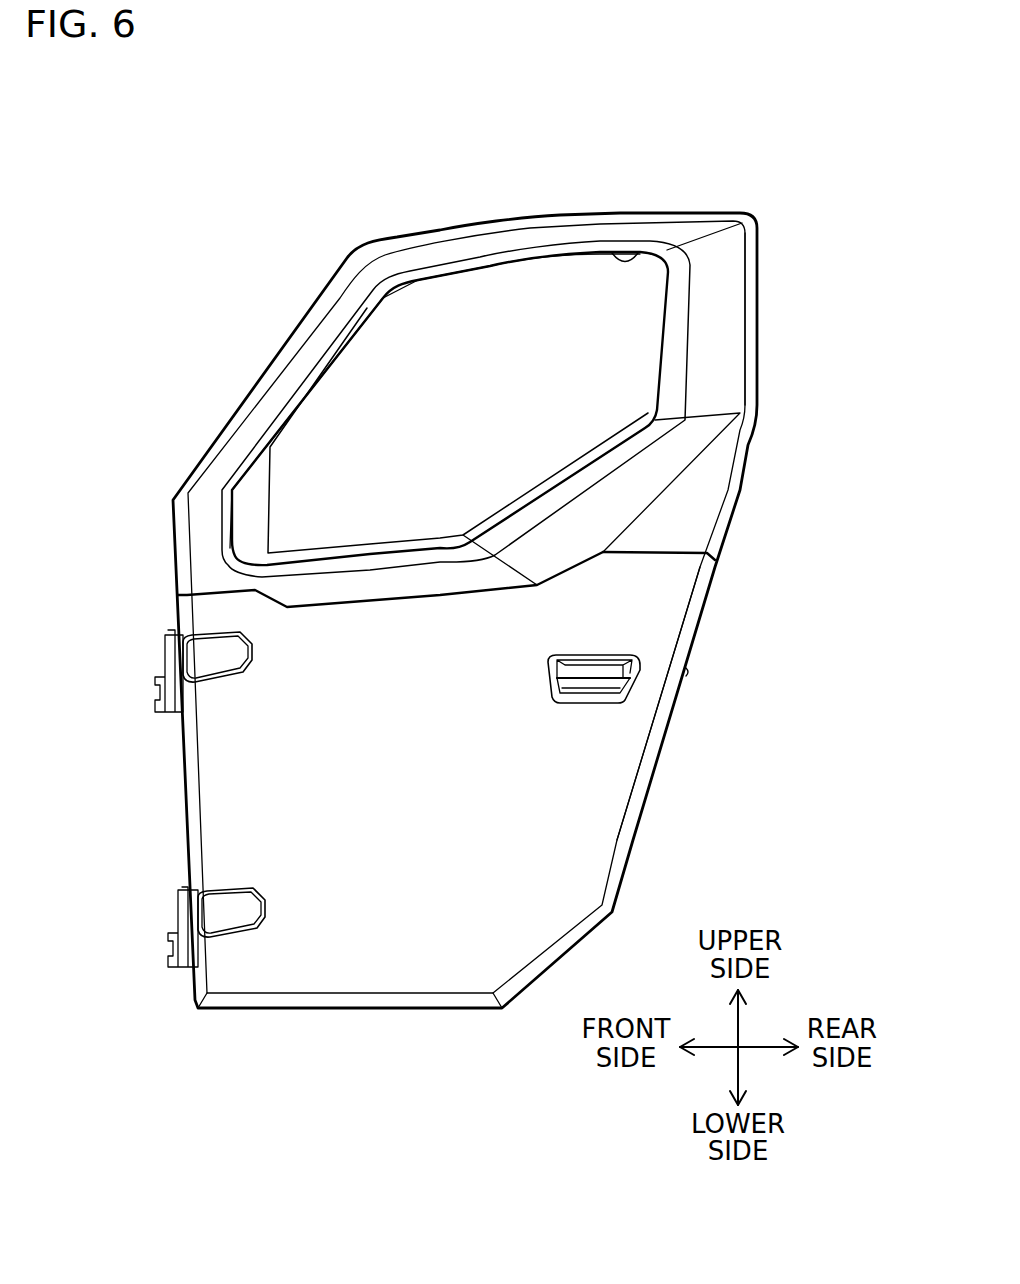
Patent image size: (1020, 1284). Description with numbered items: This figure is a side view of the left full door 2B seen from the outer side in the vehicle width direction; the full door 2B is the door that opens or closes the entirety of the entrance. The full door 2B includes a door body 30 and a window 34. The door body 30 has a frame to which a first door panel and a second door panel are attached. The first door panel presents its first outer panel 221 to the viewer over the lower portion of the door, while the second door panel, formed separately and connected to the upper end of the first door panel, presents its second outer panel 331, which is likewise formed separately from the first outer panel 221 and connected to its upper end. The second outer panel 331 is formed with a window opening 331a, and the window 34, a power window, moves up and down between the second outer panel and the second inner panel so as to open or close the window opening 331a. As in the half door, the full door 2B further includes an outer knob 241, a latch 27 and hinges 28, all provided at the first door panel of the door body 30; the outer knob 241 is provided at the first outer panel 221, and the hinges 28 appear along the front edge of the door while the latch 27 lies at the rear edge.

The full door 2B is at (755, 163).
The window 34 is at (410, 318).
The window opening 331a is at (612, 250).
The door body 30 is at (757, 251).
The second outer panel 331 is at (690, 495).
The first outer panel 221 is at (598, 797).
The hinges 28 is at (165, 653).
The outer knob 241 is at (600, 680).
The latch 27 is at (688, 671).